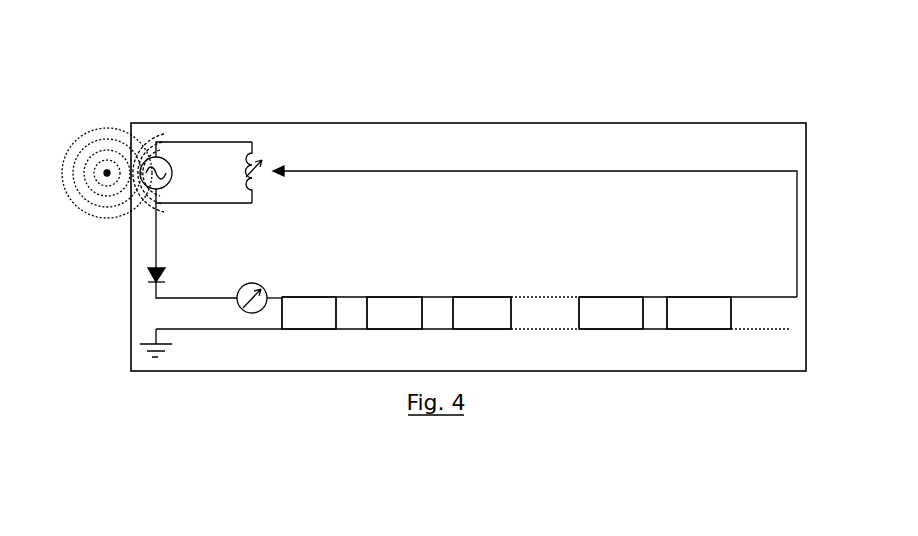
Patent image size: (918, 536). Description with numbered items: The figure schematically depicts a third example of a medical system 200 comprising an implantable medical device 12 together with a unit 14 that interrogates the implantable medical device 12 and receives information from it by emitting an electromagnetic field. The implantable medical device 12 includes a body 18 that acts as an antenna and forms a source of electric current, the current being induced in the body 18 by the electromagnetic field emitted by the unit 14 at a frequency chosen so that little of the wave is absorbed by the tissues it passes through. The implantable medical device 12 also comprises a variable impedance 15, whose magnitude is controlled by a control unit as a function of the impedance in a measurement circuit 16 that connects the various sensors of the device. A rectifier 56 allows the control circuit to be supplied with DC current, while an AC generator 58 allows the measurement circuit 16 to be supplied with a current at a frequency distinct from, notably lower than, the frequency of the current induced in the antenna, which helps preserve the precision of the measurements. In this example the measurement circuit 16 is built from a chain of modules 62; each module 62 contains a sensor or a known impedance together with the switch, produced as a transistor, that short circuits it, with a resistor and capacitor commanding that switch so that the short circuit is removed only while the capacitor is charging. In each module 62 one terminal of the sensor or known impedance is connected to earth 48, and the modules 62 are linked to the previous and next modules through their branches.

The medical system 200 is at (222, 93).
The implantable medical device 12 is at (307, 123).
The unit 14 is at (106, 170).
The body of the implantable medical device 18 is at (151, 156).
The variable impedance 15 is at (245, 168).
The rectifier 56 is at (165, 275).
The AC generator 58 is at (255, 283).
The measurement circuit 16 is at (613, 281).
The module 62 is at (709, 323).
The earth 48 is at (132, 314).